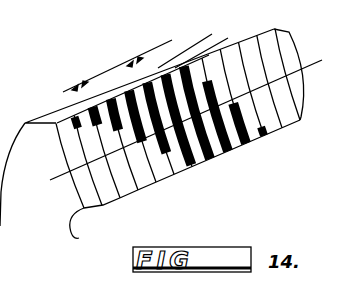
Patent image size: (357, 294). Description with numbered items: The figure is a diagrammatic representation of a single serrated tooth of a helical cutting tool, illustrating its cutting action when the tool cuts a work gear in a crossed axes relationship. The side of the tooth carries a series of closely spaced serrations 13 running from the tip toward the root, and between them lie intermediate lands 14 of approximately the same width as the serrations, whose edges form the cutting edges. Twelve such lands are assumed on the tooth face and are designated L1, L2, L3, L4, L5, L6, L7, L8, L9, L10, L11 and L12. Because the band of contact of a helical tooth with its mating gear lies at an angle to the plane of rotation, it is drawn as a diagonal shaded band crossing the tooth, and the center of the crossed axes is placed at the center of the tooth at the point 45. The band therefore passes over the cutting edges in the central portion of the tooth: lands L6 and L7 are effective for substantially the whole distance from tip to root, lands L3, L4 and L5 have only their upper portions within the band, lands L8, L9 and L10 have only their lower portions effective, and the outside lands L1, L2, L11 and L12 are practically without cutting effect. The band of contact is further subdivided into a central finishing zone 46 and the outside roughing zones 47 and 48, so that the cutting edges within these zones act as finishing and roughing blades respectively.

The serrations 13 is at (284, 43).
The intermediate lands 14 is at (163, 66).
The center of crossed axes 45 is at (193, 43).
The finishing zone 46 is at (125, 65).
The roughing zone 47 is at (73, 88).
The roughing zone 48 is at (150, 58).
The land L1 is at (88, 211).
The land L2 is at (109, 204).
The land L3 is at (128, 195).
The land L4 is at (147, 189).
The land L5 is at (166, 182).
The land L6 is at (183, 168).
The land L7 is at (207, 160).
The land L8 is at (222, 151).
The land L9 is at (243, 143).
The land L10 is at (257, 138).
The land L11 is at (275, 135).
The land L12 is at (298, 120).